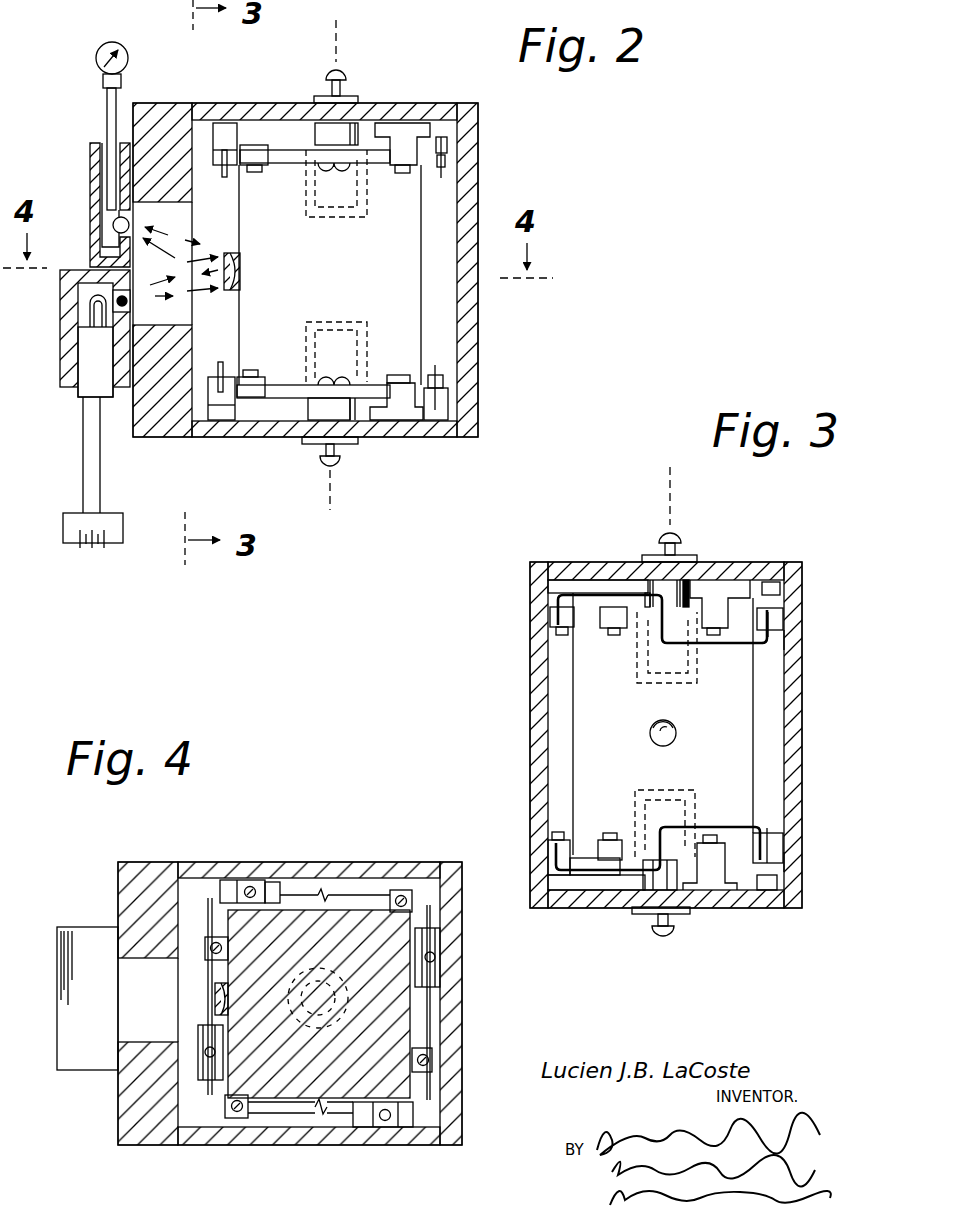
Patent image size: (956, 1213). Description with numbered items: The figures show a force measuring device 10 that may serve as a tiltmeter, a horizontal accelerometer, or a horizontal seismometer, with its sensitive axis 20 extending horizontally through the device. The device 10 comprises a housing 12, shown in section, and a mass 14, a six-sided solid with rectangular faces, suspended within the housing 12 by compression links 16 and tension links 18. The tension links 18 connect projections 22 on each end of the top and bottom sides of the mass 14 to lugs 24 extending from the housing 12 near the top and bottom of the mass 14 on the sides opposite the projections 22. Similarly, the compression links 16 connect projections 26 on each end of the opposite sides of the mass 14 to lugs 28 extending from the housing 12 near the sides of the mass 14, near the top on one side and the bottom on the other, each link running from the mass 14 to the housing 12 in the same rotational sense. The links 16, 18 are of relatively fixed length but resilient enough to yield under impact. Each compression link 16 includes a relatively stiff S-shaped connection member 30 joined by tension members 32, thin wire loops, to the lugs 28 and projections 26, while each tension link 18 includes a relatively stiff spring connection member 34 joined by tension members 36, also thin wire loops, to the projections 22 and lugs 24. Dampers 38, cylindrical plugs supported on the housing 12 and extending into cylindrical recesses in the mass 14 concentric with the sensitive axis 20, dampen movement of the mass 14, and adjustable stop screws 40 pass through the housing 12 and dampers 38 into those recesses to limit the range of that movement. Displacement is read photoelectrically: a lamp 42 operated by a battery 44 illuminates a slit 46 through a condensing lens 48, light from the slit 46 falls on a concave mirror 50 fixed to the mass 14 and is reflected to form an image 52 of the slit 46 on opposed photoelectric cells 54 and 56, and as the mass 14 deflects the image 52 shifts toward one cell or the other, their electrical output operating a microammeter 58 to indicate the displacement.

In FIG. 2, the force measuring device 10 is at (336, 58).
In FIG. 3, the force measuring device 10 is at (810, 745).
In FIG. 4, the force measuring device 10 is at (270, 855).
In FIG. 2, the housing 12 is at (478, 142).
In FIG. 3, the housing 12 is at (800, 774).
In FIG. 4, the housing 12 is at (410, 870).
In FIG. 2, the mass 14 is at (424, 320).
In FIG. 3, the mass 14 is at (757, 707).
In FIG. 4, the mass 14 is at (405, 1022).
In FIG. 3, the compression links 16 is at (617, 592).
In FIG. 4, the compression links 16 is at (432, 1080).
In FIG. 2, the tension links 18 is at (293, 163).
In FIG. 4, the tension links 18 is at (360, 894).
In FIG. 2, the sensitive axis 20 is at (373, 62).
In FIG. 3, the sensitive axis 20 is at (673, 500).
In FIG. 4, the sensitive axis 20 is at (334, 1008).
In FIG. 2, the projections 22 is at (248, 145).
In FIG. 3, the projections 22 is at (784, 640).
In FIG. 4, the projections 22 is at (415, 893).
In FIG. 2, the lugs 24 is at (407, 130).
In FIG. 3, the lugs 24 is at (550, 620).
In FIG. 4, the lugs 24 is at (243, 880).
In FIG. 3, the projections 26 is at (615, 637).
In FIG. 4, the projections 26 is at (210, 945).
In FIG. 2, the lugs 28 is at (233, 121).
In FIG. 3, the lugs 28 is at (722, 598).
In FIG. 4, the lugs 28 is at (200, 1058).
In FIG. 3, the connection member 30 is at (633, 594).
In FIG. 3, the tension members 32 is at (752, 600).
In FIG. 2, the spring connection member 34 is at (340, 170).
In FIG. 2, the tension members 36 is at (277, 147).
In FIG. 2, the dampers 38 is at (325, 122).
In FIG. 3, the dampers 38 is at (700, 893).
In FIG. 2, the stop screws 40 is at (346, 82).
In FIG. 3, the stop screws 40 is at (684, 551).
In FIG. 2, the lamp 42 is at (88, 307).
In FIG. 2, the battery 44 is at (83, 550).
In FIG. 2, the slit 46 is at (127, 302).
In FIG. 2, the condensing lens 48 is at (63, 291).
In FIG. 2, the concave mirror 50 is at (228, 255).
In FIG. 3, the concave mirror 50 is at (650, 733).
In FIG. 4, the concave mirror 50 is at (216, 1000).
In FIG. 2, the image 52 is at (140, 222).
In FIG. 2, the photoelectric cell 54 is at (113, 226).
In FIG. 2, the photoelectric cell 56 is at (118, 238).
In FIG. 2, the microammeter 58 is at (96, 60).